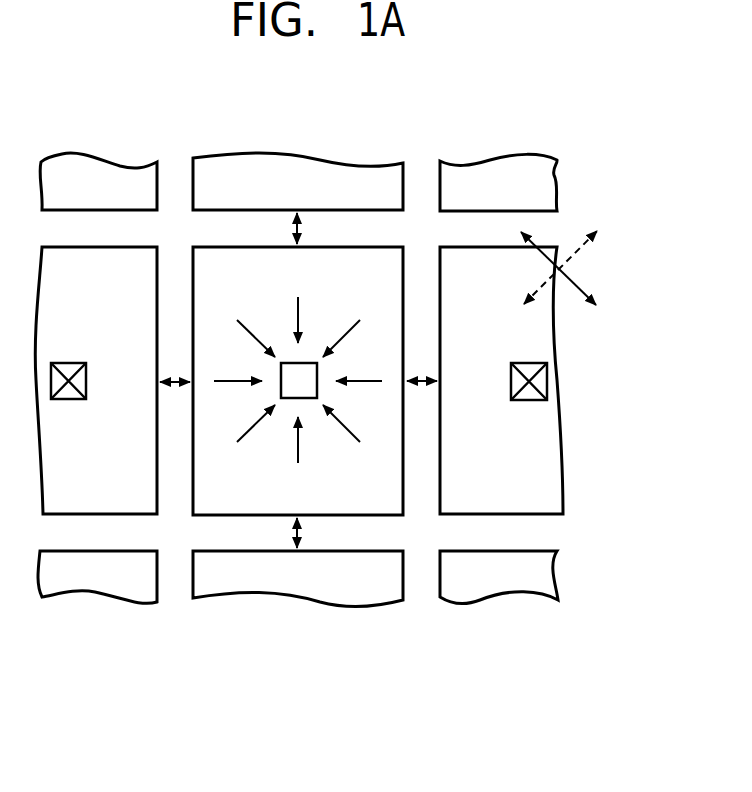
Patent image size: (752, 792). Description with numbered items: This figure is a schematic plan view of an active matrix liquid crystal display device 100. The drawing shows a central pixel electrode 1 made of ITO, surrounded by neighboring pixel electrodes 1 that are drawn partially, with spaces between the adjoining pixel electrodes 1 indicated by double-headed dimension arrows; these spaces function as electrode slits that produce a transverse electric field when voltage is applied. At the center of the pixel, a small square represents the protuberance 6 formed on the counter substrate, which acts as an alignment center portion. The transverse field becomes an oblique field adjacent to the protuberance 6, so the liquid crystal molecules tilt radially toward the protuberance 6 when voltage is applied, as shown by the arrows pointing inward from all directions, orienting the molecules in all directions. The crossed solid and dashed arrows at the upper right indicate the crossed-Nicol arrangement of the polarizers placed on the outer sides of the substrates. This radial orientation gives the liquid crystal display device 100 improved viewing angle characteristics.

The liquid crystal display device 100 is at (578, 127).
The pixel electrode 1 is at (370, 479).
The protuberance 6 is at (305, 376).